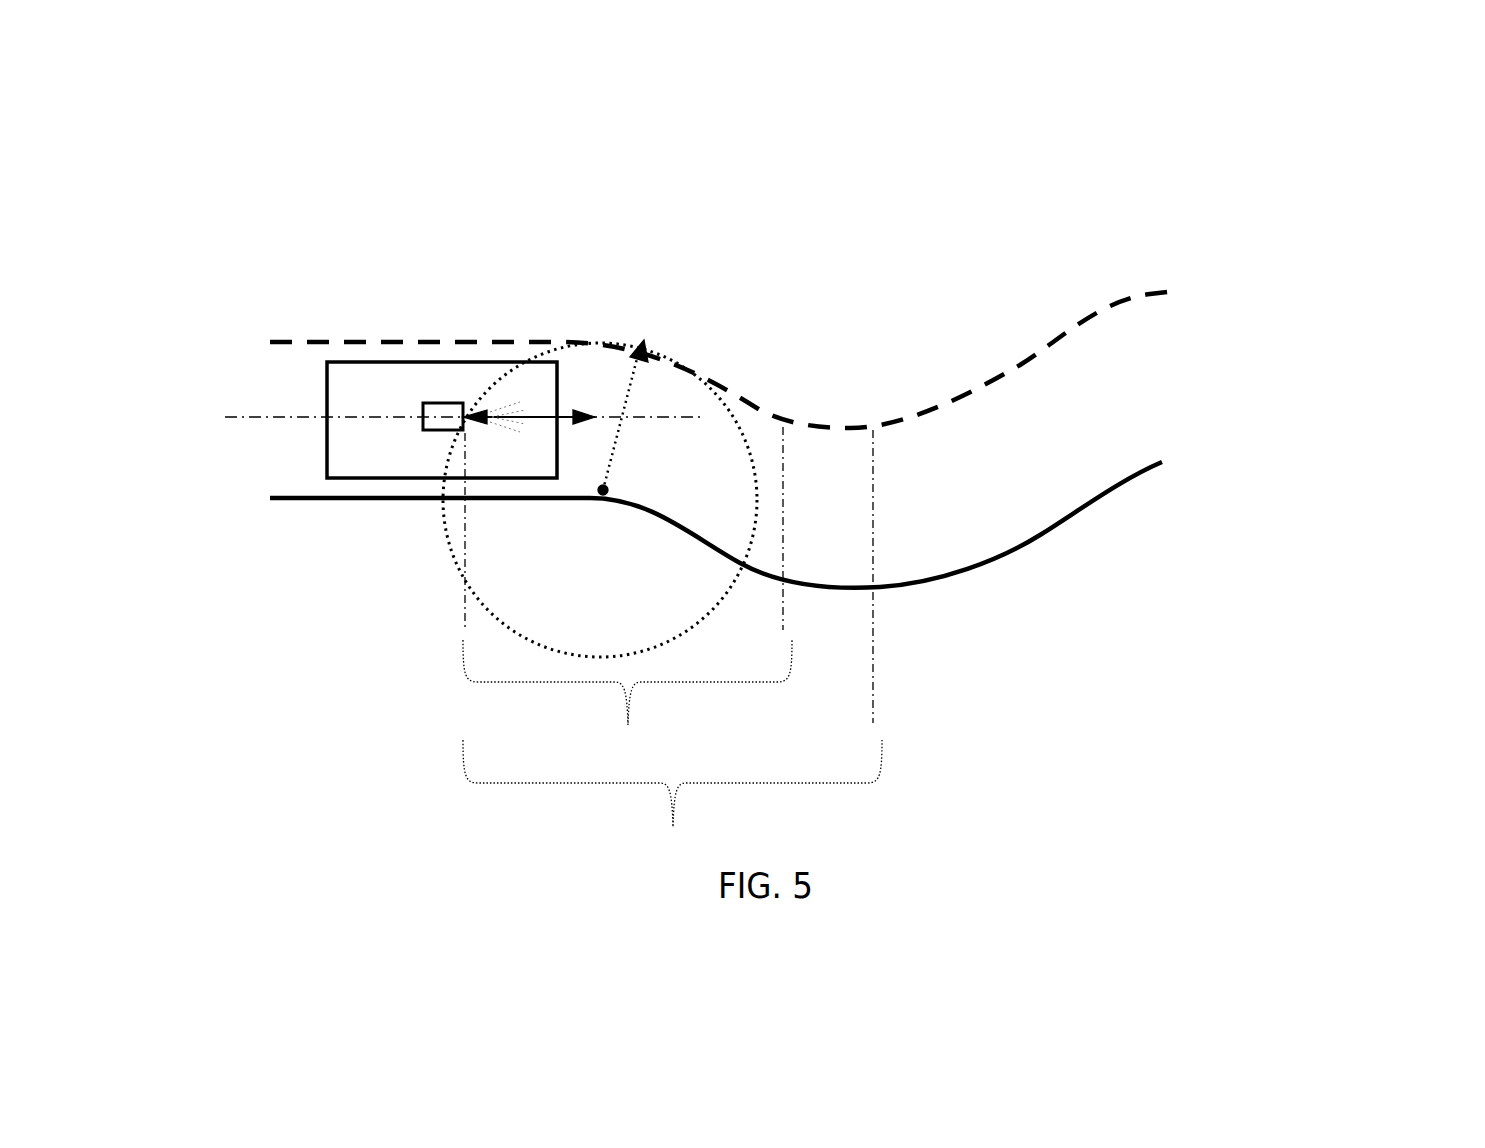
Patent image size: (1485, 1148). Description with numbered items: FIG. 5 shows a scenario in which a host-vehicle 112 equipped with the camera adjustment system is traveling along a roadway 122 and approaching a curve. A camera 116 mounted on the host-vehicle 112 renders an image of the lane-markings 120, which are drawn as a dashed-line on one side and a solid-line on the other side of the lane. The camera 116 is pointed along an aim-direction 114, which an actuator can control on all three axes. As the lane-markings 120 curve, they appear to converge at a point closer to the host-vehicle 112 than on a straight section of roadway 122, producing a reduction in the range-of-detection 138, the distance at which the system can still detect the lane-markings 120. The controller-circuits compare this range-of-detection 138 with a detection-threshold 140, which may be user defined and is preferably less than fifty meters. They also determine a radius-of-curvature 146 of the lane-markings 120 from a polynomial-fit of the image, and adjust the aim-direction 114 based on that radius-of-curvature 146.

The host-vehicle 112 is at (327, 457).
The aim-direction 114 is at (575, 405).
The camera 116 is at (443, 403).
The lane-markings 120 is at (1083, 317).
The roadway 122 is at (1105, 397).
The range-of-detection 138 is at (453, 660).
The detection-threshold 140 is at (463, 765).
The radius-of-curvature 146 is at (645, 345).